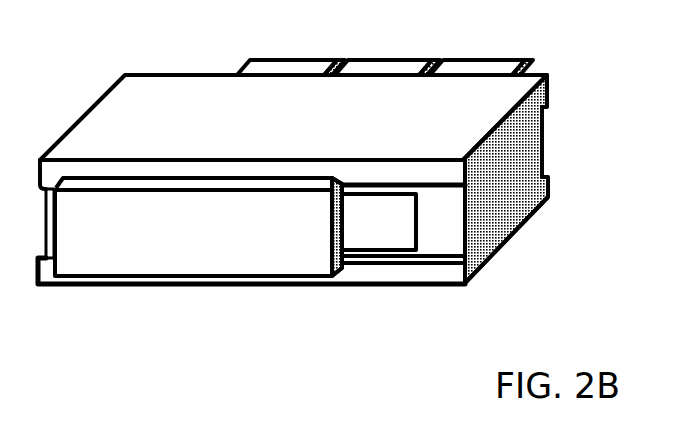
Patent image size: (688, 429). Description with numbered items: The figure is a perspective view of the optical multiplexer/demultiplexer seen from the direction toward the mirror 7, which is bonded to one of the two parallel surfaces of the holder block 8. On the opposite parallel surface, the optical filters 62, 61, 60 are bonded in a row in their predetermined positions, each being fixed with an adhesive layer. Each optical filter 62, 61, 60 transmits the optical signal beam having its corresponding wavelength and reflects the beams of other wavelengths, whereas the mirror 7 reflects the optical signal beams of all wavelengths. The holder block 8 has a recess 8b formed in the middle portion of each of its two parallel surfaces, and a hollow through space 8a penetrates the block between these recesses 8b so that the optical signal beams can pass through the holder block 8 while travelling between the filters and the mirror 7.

The holder block 8 is at (168, 73).
The hollow through space 8a is at (384, 240).
The recess 8b is at (543, 158).
The mirror 7 is at (185, 277).
The optical filter 62 is at (290, 60).
The optical filter 61 is at (387, 60).
The optical filter 60 is at (487, 60).